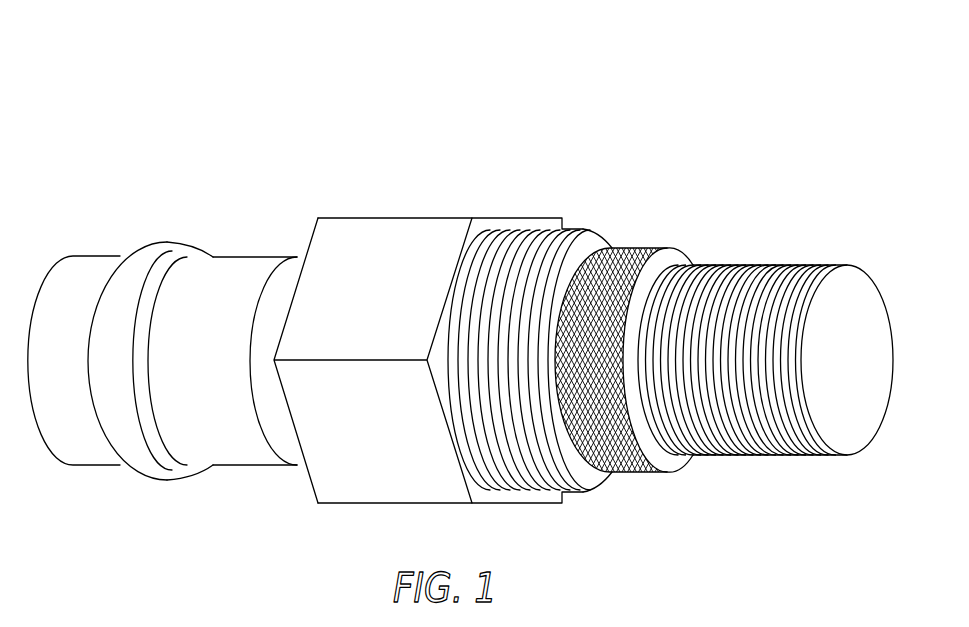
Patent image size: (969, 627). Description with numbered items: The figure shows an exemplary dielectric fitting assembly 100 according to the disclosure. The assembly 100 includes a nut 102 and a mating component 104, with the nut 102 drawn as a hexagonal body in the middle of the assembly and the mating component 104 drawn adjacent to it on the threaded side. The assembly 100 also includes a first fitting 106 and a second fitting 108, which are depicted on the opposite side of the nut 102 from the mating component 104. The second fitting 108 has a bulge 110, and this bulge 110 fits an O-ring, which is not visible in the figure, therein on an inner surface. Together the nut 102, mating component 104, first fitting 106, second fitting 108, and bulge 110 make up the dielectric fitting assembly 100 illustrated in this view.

The dielectric fitting assembly 100 is at (772, 123).
The nut 102 is at (407, 218).
The mating component 104 is at (640, 248).
The first fitting 106 is at (297, 257).
The second fitting 108 is at (237, 257).
The bulge 110 is at (163, 485).